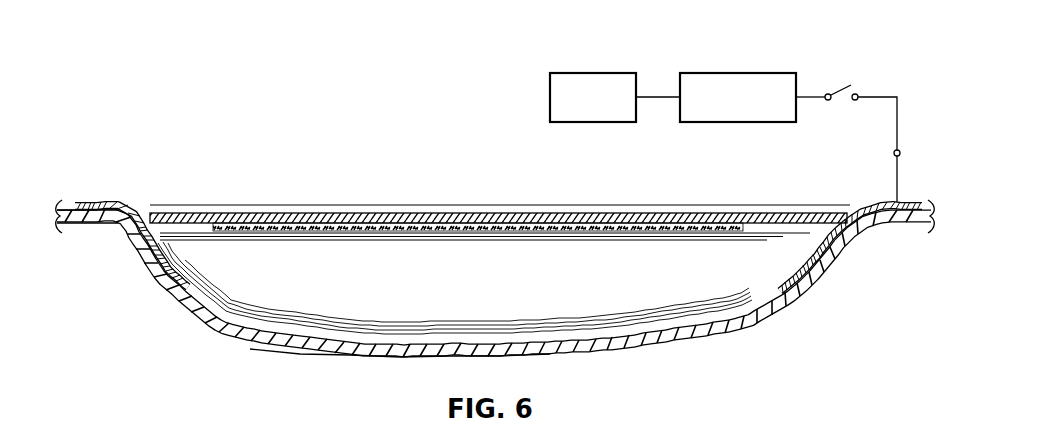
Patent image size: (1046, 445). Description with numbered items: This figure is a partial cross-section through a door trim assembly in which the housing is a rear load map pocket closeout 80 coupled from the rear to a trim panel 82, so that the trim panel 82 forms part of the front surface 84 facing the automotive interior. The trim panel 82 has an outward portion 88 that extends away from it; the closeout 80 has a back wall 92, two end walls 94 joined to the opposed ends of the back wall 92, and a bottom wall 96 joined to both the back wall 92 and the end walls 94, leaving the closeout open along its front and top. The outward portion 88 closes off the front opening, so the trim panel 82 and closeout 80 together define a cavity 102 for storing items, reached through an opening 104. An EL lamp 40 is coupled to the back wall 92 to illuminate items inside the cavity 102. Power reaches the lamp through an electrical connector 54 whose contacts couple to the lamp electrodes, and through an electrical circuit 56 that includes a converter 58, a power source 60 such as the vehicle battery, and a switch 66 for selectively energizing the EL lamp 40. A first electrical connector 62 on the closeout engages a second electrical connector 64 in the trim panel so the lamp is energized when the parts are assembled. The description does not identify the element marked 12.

The cooking vessel 12 is at (495, 284).
The EL lamp 40 is at (427, 231).
The electrical connector 54 is at (740, 232).
The electrical circuit 56 is at (730, 110).
The converter 58 is at (697, 73).
The power source 60 is at (560, 73).
The first electrical connector 62 is at (922, 194).
The second electrical connector 64 is at (900, 151).
The switch 66 is at (849, 88).
The rear load map pocket closeout 80 is at (500, 224).
The trim panel 82 is at (93, 224).
The front surface 84 is at (900, 224).
The outward portion 88 is at (356, 352).
The back wall 92 is at (350, 212).
The end walls 94 is at (180, 262).
The bottom wall 96 is at (375, 282).
The cavity 102 is at (607, 268).
The opening 104 is at (315, 333).